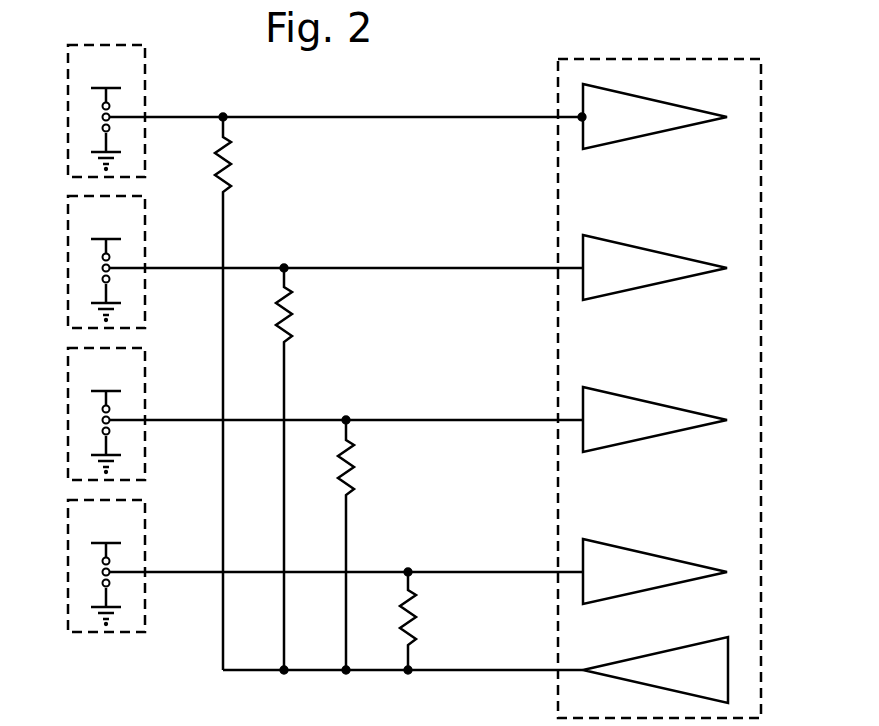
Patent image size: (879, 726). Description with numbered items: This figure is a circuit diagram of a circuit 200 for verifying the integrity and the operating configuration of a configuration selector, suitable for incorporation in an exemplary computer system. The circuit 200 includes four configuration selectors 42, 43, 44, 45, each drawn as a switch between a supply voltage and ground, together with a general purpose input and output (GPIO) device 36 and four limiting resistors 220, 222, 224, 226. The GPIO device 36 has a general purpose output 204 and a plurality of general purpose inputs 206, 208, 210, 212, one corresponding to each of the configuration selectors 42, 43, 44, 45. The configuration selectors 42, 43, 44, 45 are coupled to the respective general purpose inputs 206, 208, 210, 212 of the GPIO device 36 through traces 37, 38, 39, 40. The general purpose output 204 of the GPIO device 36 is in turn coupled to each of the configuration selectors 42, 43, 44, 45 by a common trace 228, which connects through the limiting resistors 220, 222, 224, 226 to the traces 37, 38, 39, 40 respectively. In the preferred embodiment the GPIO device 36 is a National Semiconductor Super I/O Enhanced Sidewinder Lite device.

The circuit 200 is at (473, 44).
The general purpose input and output (GPIO) device 36 is at (761, 182).
The trace 37 is at (473, 117).
The trace 38 is at (473, 268).
The trace 39 is at (473, 420).
The trace 40 is at (473, 572).
The configuration selector 42 is at (68, 92).
The configuration selector 43 is at (68, 243).
The configuration selector 44 is at (68, 393).
The configuration selector 45 is at (68, 547).
The general purpose output 204 is at (665, 650).
The general purpose input 206 is at (663, 132).
The general purpose input 208 is at (660, 284).
The general purpose input 210 is at (660, 436).
The general purpose input 212 is at (665, 557).
The limiting resistor 220 is at (231, 155).
The limiting resistor 222 is at (292, 306).
The limiting resistor 224 is at (354, 458).
The limiting resistor 226 is at (416, 628).
The trace 228 is at (473, 670).